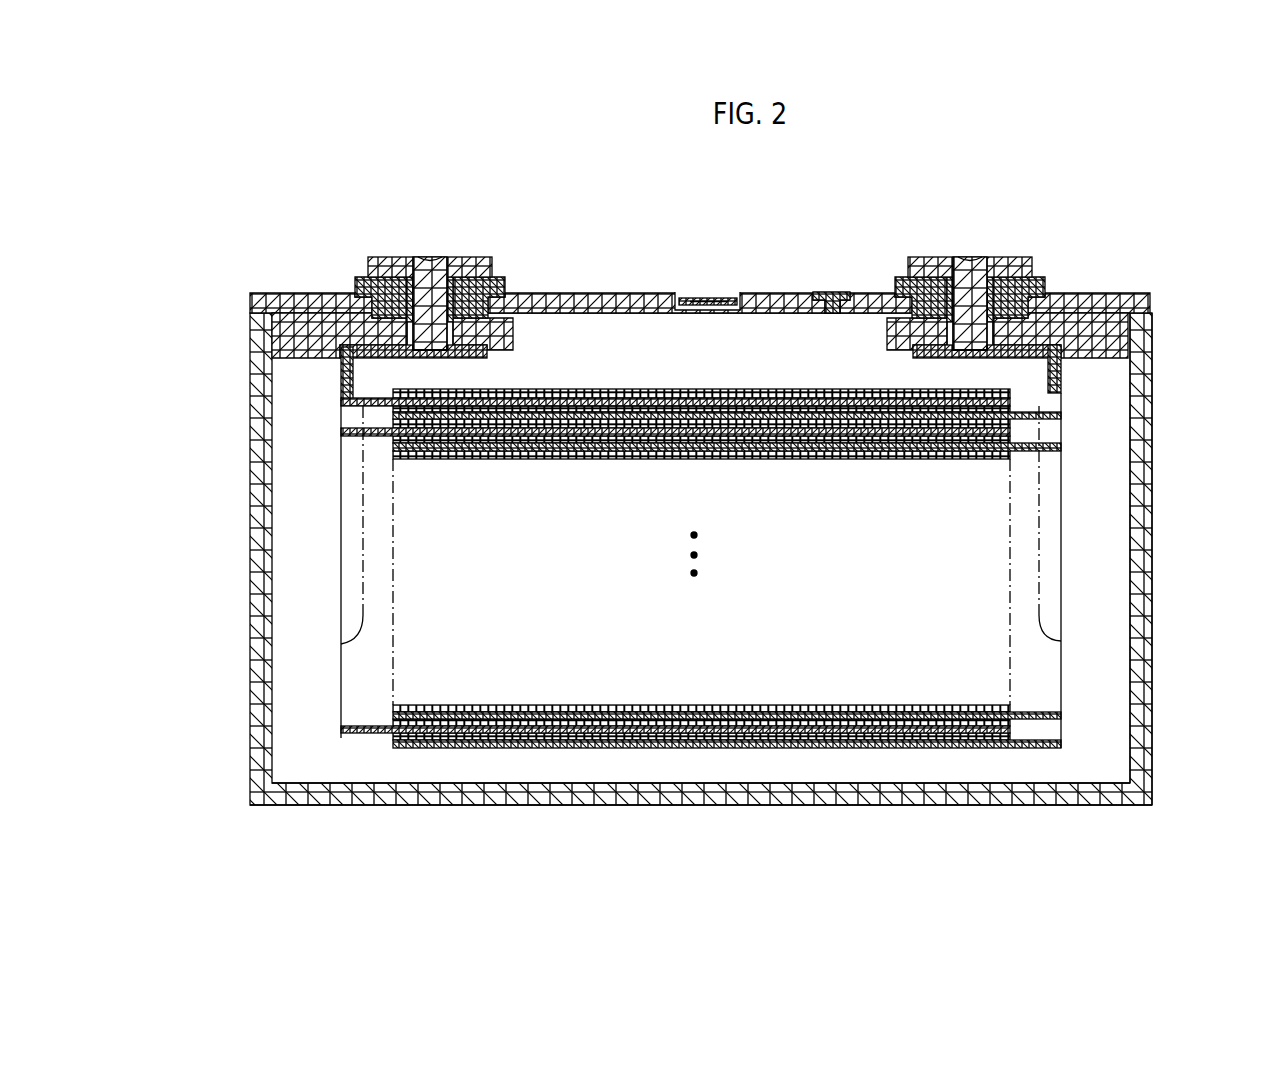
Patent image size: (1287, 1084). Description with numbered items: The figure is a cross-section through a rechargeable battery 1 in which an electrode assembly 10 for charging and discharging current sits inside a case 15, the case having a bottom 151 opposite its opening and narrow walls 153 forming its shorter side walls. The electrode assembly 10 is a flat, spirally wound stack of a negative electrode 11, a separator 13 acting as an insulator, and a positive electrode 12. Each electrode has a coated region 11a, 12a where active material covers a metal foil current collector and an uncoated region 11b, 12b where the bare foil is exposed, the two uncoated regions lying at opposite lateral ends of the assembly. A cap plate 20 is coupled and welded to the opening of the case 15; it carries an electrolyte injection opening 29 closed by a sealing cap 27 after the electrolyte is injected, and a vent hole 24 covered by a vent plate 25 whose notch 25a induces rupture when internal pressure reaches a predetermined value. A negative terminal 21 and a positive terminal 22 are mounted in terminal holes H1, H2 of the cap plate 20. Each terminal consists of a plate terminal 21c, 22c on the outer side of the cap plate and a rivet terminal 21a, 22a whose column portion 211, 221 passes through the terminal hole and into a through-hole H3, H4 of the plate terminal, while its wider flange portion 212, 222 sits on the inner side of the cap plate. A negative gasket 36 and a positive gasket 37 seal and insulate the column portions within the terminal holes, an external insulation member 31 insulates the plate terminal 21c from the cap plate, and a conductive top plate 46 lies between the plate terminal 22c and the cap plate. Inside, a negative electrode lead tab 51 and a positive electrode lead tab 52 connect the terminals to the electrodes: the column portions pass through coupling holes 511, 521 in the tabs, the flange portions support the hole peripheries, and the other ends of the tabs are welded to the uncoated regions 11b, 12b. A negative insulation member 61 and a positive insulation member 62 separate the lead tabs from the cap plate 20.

The rechargeable battery 1 is at (613, 162).
The electrode assembly 10 is at (702, 649).
The negative electrode 11 is at (675, 653).
The coated region of the negative electrode 11a is at (489, 734).
The uncoated region of the negative electrode 11b is at (366, 633).
The positive electrode 12 is at (728, 649).
The coated region of the positive electrode 12a is at (910, 749).
The uncoated region of the positive electrode 12b is at (1041, 628).
The separator 13 is at (699, 736).
The case 15 is at (1140, 497).
The bottom 151 is at (1100, 795).
The narrow walls 153 is at (1141, 559).
The cap plate 20 is at (601, 298).
The negative terminal 21 is at (339, 353).
The rivet terminal 21a is at (311, 354).
The column portion 211 is at (407, 293).
The flange portion 212 is at (428, 329).
The plate terminal 21c is at (386, 258).
The positive terminal 22 is at (1064, 348).
The rivet terminal 22a is at (1095, 350).
The column portion 221 is at (993, 293).
The flange portion 222 is at (972, 329).
The plate terminal 22c is at (1017, 258).
The vent hole 24 is at (715, 313).
The vent plate 25 is at (733, 298).
The notch 25a is at (706, 297).
The sealing cap 27 is at (833, 292).
The electrolyte injection opening 29 is at (832, 313).
The external insulation member 31 is at (500, 280).
The negative gasket 36 is at (375, 282).
The positive gasket 37 is at (1037, 280).
The conductive top plate 46 is at (899, 284).
The negative electrode lead tab 51 is at (343, 377).
The coupling hole 511 is at (430, 347).
The positive electrode lead tab 52 is at (1049, 391).
The coupling hole 521 is at (970, 347).
The negative insulation member 61 is at (290, 340).
The positive insulation member 62 is at (1110, 337).
The terminal hole H1 is at (452, 292).
The terminal hole H2 is at (951, 296).
The through-hole H3 is at (424, 258).
The through-hole H4 is at (975, 258).